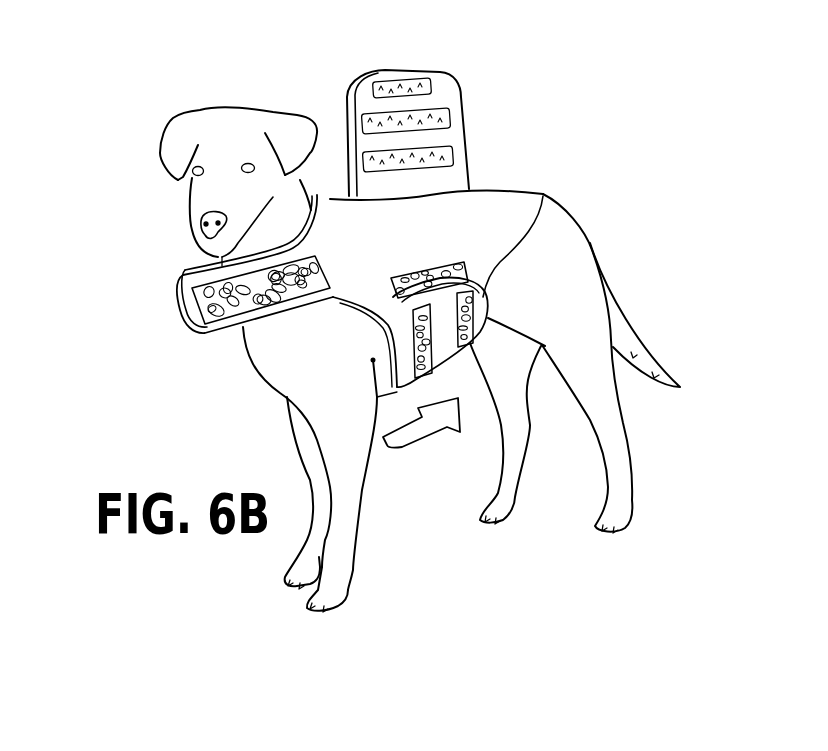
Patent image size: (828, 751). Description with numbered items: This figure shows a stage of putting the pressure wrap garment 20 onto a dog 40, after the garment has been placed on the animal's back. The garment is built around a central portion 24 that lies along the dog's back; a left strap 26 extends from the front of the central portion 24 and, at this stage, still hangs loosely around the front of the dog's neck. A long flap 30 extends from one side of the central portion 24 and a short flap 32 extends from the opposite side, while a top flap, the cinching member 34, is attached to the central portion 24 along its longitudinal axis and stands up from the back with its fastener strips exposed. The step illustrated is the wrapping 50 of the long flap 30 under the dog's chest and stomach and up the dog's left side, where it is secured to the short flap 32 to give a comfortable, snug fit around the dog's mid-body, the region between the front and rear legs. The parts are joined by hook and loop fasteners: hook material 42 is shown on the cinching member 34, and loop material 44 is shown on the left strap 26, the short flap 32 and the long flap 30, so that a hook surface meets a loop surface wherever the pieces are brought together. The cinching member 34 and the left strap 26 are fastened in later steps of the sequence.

The pressure wrap garment 20 is at (514, 107).
The central portion 24 is at (520, 200).
The left strap 26 is at (187, 312).
The long flap 30 is at (477, 303).
The short flap 32 is at (384, 328).
The cinching member 34 is at (403, 78).
The dog 40 is at (243, 115).
The hook material 42 is at (363, 123).
The loop material 44 is at (237, 307).
The wrapping of the long flap 50 is at (430, 432).